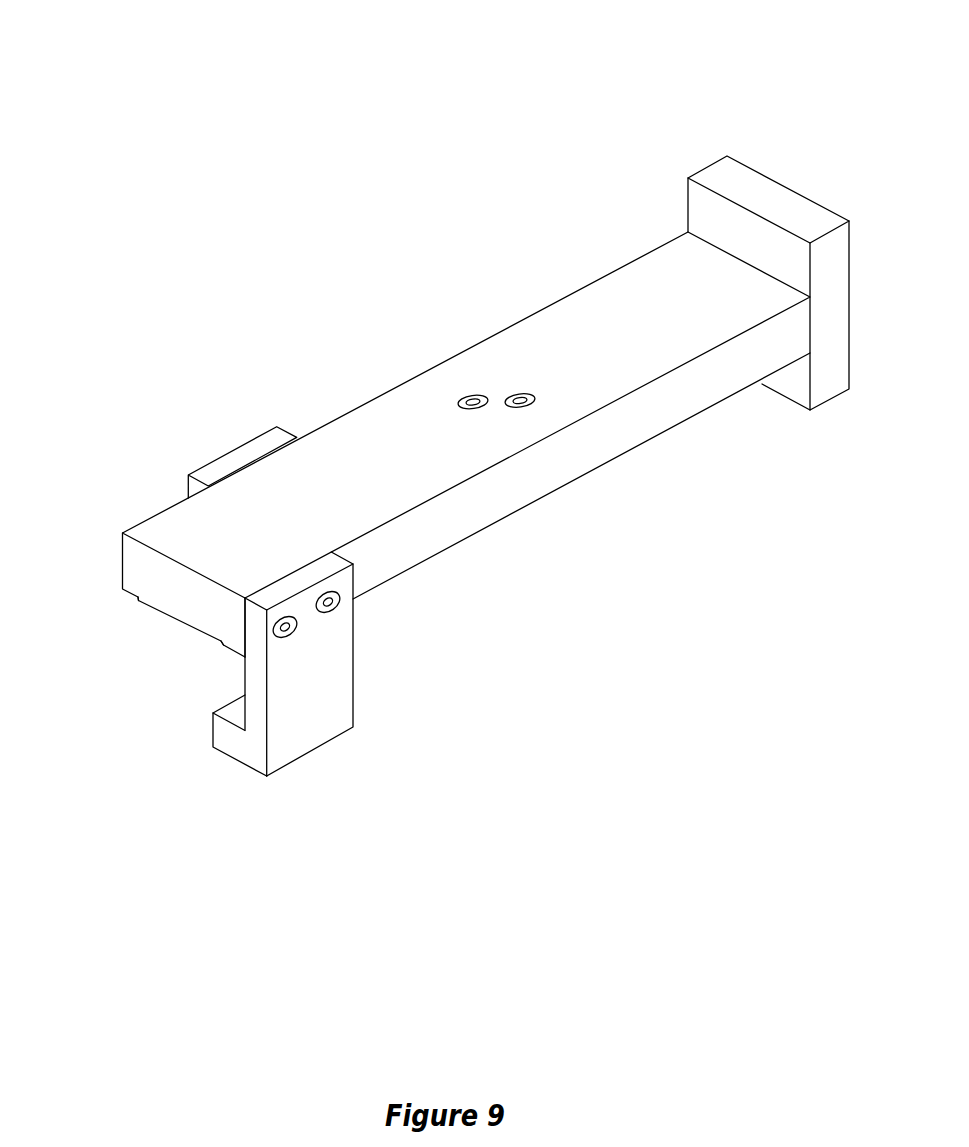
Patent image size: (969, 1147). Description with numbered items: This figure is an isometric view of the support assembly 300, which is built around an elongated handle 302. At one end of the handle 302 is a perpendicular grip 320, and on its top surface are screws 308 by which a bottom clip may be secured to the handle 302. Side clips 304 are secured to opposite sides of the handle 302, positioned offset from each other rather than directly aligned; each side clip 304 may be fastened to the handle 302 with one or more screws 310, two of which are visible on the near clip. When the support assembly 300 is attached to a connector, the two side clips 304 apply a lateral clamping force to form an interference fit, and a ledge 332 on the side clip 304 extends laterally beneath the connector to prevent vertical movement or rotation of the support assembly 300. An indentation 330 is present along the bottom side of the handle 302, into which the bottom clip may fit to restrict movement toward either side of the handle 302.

The support assembly 300 is at (125, 55).
The handle 302 is at (410, 463).
The side clips 304 is at (258, 444).
The screws 308 is at (482, 395).
The screws 310 is at (300, 624).
The perpendicular grip 320 is at (761, 152).
The indentation 330 is at (168, 644).
The ledge 332 is at (212, 777).